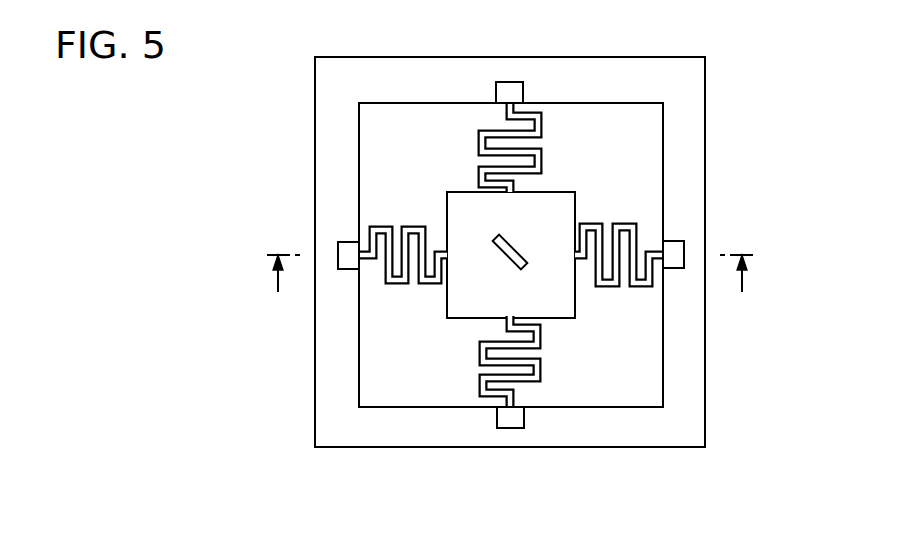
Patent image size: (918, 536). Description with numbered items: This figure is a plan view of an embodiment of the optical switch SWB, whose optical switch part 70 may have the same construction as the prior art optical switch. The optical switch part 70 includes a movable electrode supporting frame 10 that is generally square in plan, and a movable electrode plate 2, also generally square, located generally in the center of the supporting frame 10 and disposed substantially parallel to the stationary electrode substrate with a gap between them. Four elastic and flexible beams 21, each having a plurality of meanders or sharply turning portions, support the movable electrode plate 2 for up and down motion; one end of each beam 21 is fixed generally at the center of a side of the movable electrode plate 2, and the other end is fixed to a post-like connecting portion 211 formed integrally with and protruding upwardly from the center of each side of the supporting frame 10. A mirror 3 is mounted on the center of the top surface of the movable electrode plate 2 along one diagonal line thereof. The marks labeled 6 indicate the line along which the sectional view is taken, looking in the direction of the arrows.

The optical switch part 70 is at (706, 68).
The movable electrode supporting frame 10 is at (692, 418).
The optical switch SWB is at (400, 34).
The movable electrode plate 2 is at (552, 213).
The elastic and flexible beam 21 is at (540, 126).
The post-like connecting portion 211 is at (511, 92).
The mirror 3 is at (522, 266).
The section line 6— 6 is at (510, 288).